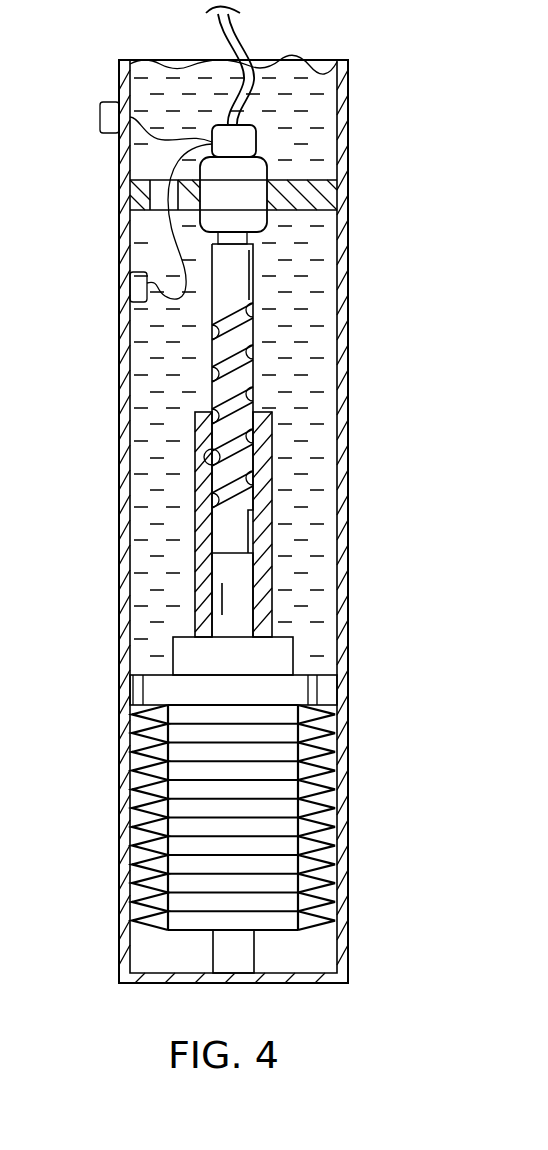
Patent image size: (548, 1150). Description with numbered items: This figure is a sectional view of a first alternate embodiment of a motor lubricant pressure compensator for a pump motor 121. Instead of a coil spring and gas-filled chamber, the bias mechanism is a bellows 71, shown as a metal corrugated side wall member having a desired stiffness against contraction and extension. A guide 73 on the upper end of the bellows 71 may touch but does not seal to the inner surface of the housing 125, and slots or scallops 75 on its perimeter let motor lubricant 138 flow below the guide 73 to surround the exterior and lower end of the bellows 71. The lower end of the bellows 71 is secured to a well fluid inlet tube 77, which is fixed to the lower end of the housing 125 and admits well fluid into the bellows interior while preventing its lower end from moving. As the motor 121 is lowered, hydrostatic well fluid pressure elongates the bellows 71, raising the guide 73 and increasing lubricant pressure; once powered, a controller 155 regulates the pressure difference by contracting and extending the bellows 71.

The pump motor 121 is at (351, 171).
The housing 125 is at (348, 560).
The motor lubricant 138 is at (328, 377).
The controller 155 is at (244, 146).
The slots or scallops 75 is at (327, 682).
The guide 73 is at (306, 696).
The bellows 71 is at (293, 808).
The well fluid inlet tube 77 is at (213, 951).